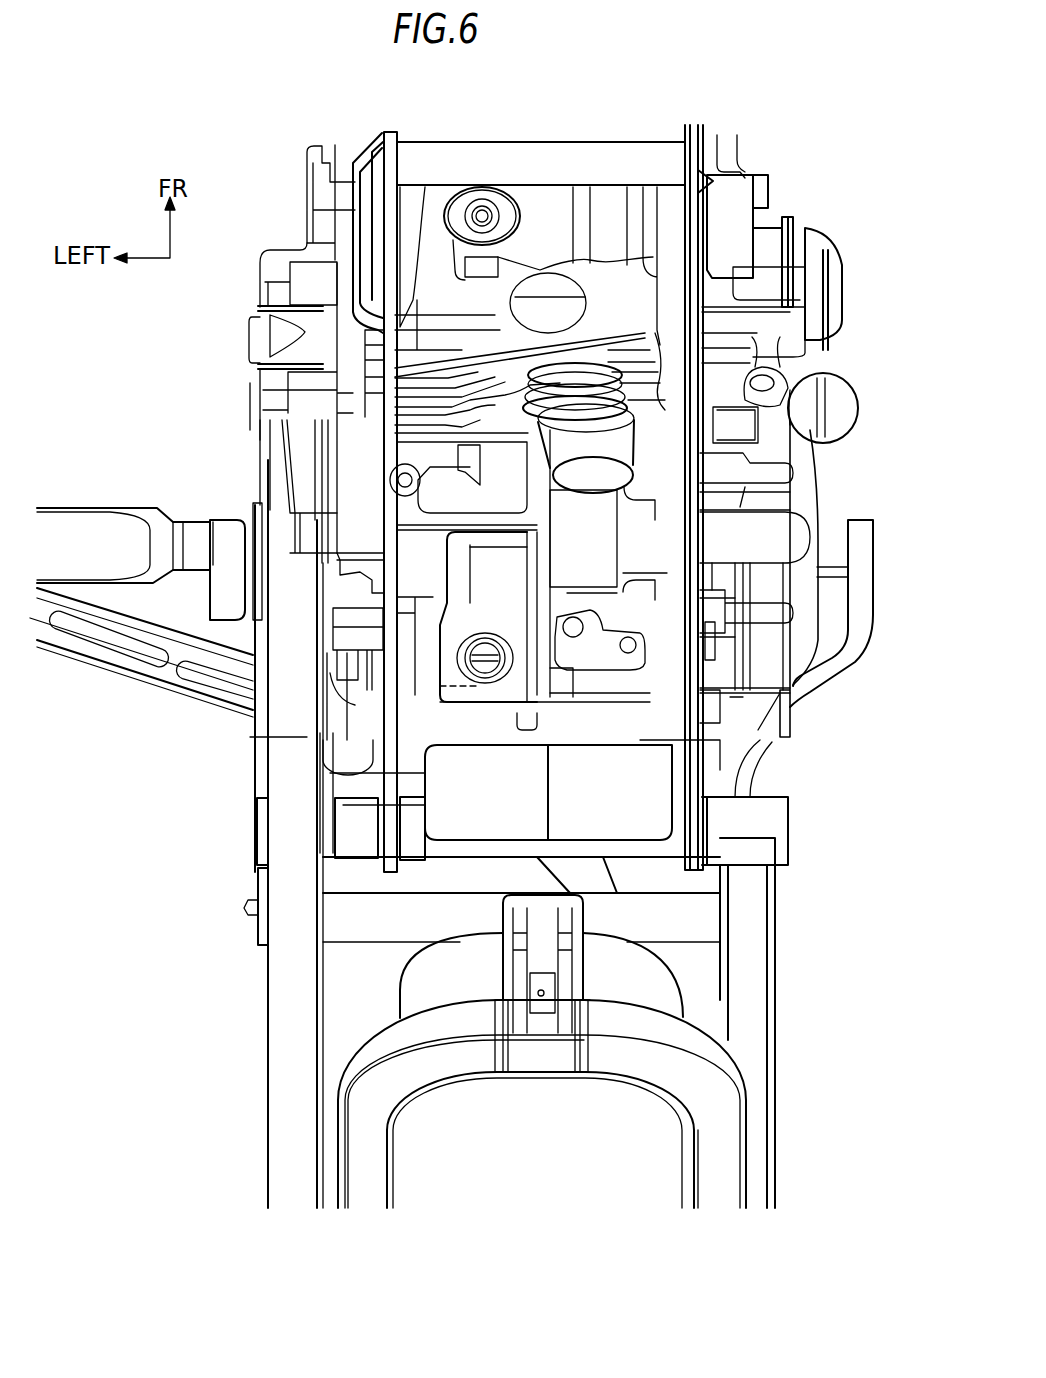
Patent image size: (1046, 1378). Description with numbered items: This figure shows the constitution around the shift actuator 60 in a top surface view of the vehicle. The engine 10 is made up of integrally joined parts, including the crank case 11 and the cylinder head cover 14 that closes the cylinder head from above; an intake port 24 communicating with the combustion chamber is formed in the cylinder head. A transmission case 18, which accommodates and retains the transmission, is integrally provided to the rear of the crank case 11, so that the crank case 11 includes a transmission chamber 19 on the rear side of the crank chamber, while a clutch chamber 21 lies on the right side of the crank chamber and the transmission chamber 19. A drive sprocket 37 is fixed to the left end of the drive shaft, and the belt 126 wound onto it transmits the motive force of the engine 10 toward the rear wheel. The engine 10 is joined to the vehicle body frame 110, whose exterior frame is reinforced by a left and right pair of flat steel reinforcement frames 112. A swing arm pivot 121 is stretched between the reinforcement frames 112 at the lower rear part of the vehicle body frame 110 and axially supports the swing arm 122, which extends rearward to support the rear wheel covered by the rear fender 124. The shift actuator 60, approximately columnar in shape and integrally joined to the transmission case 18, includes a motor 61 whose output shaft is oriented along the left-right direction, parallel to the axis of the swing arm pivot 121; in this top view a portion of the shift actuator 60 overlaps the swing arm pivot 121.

The engine 10 is at (237, 357).
The crank case 11 is at (359, 503).
The cylinder head cover 14 is at (515, 167).
The transmission case 18 is at (490, 607).
The transmission chamber 19 is at (473, 687).
The clutch chamber 21 is at (803, 497).
The intake port 24 is at (585, 376).
The drive sprocket 37 is at (257, 585).
The shift actuator 60 is at (663, 851).
The motor 61 is at (627, 830).
The vehicle body frame 110 is at (483, 821).
The reinforcement frame 112 is at (390, 840).
The swing arm pivot 121 is at (425, 850).
The swing arm 122 is at (330, 1176).
The rear fender 124 is at (423, 985).
The belt 126 is at (288, 913).